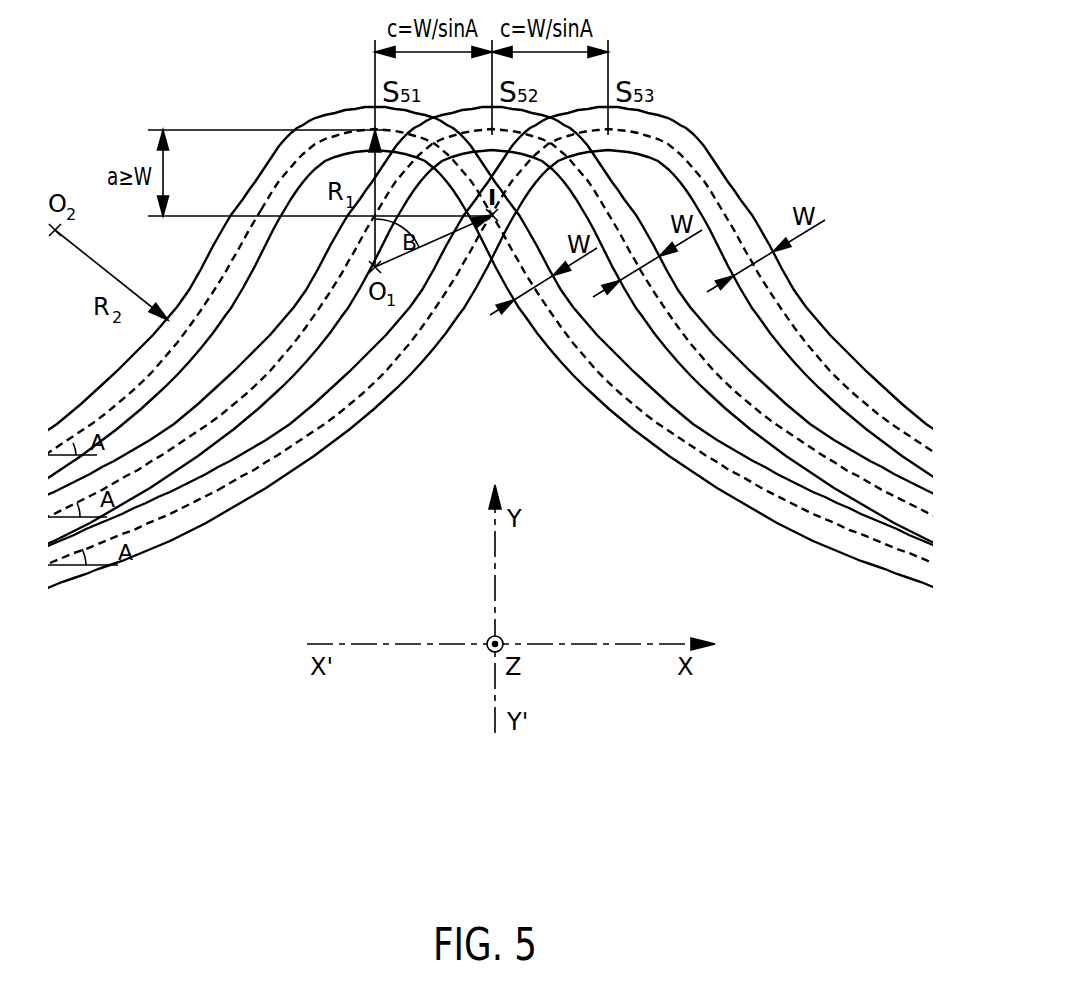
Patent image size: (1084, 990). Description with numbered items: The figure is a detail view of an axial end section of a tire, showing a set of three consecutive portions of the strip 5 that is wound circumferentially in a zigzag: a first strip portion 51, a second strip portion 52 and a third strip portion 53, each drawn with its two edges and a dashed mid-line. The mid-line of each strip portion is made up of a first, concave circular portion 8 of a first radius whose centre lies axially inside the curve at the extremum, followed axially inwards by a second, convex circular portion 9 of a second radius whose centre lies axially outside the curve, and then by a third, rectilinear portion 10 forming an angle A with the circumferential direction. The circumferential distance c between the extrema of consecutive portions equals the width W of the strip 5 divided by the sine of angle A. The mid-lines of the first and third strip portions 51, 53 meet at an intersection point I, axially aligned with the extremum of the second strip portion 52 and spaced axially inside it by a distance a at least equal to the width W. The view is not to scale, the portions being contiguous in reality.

The strip 5 is at (491, 349).
The first, concave circular portion 8 is at (320, 140).
The second, convex circular portion 9 is at (128, 388).
The third, rectilinear portion 10 is at (153, 533).
The first strip portion 51 is at (495, 332).
The second strip portion 52 is at (248, 397).
The third strip portion 53 is at (488, 367).